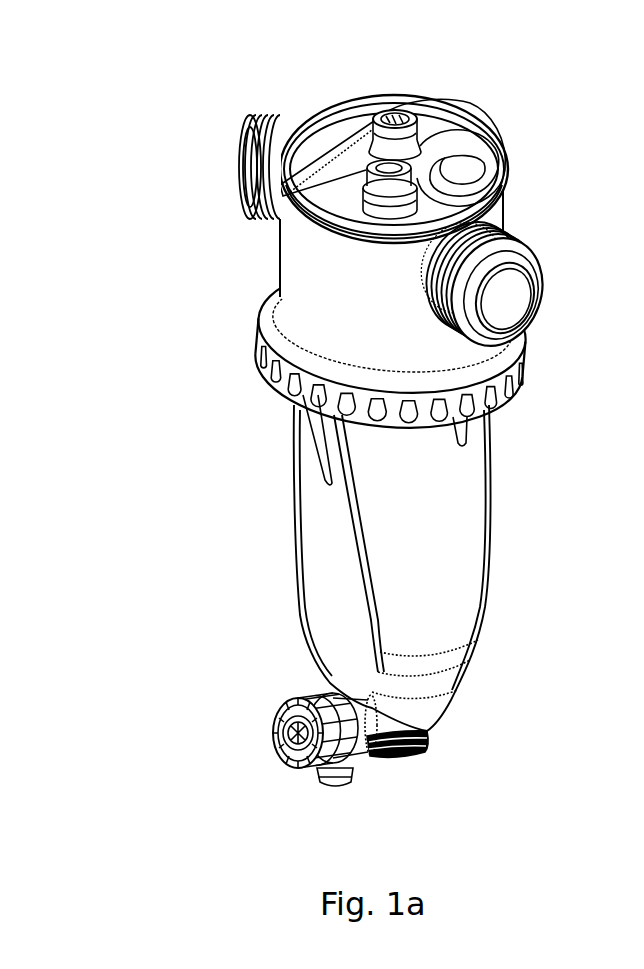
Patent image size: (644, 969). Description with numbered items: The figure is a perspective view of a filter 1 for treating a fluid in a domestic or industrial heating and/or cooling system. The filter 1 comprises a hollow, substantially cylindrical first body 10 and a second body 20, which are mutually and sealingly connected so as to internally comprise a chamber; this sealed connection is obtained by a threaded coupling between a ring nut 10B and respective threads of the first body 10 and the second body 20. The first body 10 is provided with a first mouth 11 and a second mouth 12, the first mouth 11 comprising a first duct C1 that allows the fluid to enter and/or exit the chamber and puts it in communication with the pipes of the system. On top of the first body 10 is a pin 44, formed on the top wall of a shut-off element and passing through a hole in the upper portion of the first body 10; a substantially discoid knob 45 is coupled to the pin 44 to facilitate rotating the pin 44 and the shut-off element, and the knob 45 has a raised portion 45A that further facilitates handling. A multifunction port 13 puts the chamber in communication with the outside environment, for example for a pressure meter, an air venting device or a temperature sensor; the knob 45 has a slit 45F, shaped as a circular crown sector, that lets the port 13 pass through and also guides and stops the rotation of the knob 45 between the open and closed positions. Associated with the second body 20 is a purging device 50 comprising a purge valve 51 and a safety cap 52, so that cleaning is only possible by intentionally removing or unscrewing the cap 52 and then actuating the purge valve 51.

The filter 1 is at (178, 495).
The first body 10 is at (313, 276).
The ring nut 10B is at (275, 378).
The first mouth 11 is at (526, 288).
The second mouth 12 is at (240, 180).
The port 13 is at (363, 184).
The second body 20 is at (340, 602).
The pin 44 is at (386, 112).
The knob 45 is at (312, 143).
The raised portion 45A is at (452, 112).
The slit 45F is at (482, 148).
The purging device 50 is at (281, 773).
The purge valve 51 is at (290, 742).
The safety cap 52 is at (340, 783).
The first duct C1 is at (503, 297).